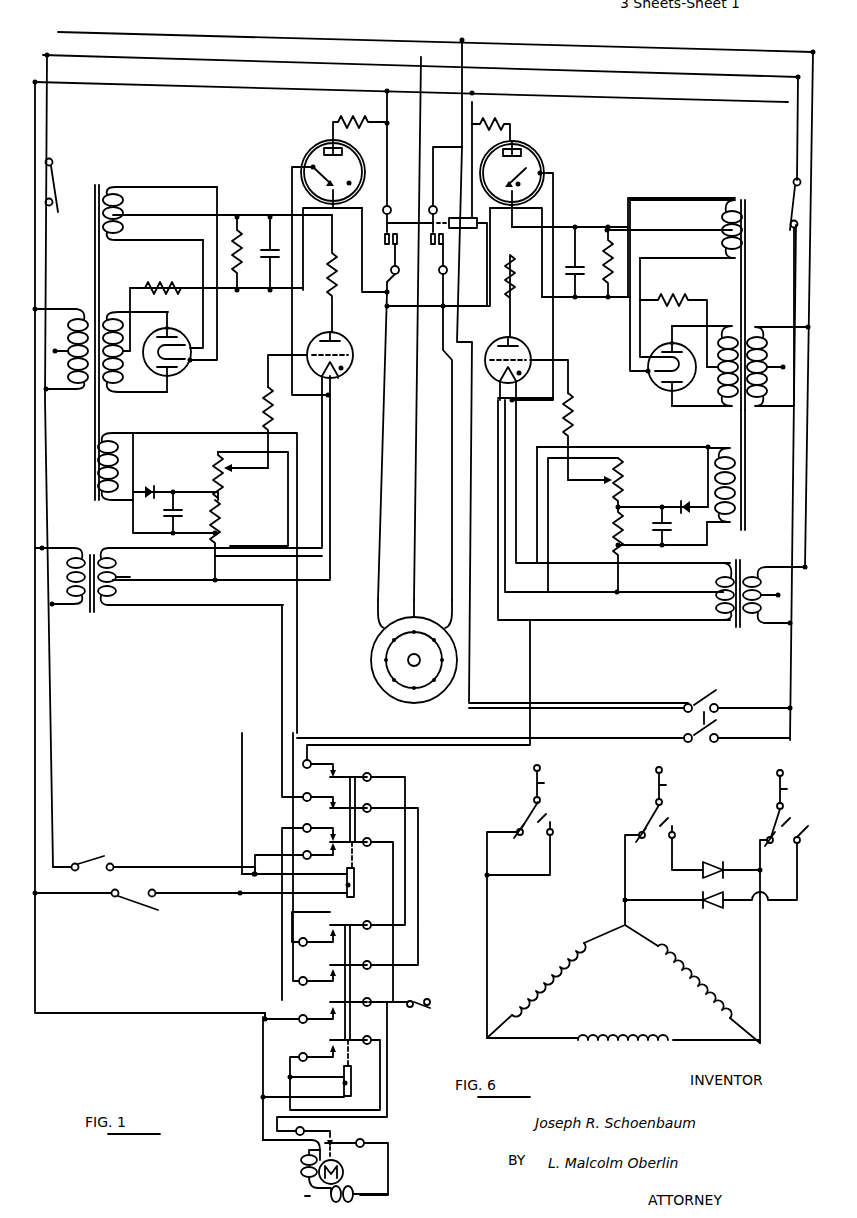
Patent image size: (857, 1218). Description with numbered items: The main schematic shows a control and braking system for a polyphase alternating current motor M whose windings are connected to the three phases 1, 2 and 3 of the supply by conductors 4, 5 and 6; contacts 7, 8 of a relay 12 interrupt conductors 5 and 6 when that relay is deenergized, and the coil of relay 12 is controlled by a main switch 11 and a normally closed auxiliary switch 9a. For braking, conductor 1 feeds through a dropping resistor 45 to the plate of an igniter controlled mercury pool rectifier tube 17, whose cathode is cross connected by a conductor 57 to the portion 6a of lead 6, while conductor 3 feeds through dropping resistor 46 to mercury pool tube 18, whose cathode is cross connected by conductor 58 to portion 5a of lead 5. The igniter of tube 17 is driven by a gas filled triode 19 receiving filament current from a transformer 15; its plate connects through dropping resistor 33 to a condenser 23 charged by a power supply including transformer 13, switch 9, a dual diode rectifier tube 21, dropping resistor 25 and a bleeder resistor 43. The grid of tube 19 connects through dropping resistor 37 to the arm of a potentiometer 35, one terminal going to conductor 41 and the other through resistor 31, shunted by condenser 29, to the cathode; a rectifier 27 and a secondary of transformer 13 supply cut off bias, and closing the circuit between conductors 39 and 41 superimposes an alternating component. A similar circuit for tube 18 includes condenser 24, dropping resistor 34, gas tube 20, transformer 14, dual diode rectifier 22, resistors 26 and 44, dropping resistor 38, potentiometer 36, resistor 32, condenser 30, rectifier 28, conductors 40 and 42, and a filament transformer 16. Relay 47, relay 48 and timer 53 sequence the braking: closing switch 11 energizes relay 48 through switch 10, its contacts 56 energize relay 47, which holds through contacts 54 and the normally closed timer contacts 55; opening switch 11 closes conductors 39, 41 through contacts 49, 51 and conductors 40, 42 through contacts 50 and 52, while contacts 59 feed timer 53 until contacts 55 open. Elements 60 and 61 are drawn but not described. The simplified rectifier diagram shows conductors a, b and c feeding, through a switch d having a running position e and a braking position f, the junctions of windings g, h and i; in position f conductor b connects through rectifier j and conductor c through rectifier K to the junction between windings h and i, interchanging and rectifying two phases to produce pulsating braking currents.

In FIG. 1, the phase conductor 1 is at (118, 82).
In FIG. 1, the phase conductor 2 is at (162, 55).
In FIG. 1, the phase conductor 3 is at (208, 32).
In FIG. 1, the conductor 4 is at (420, 158).
In FIG. 1, the conductor 5 is at (386, 192).
In FIG. 1, the portion of lead 5a is at (382, 398).
In FIG. 1, the conductor 6 is at (434, 192).
In FIG. 1, the portion of lead 6a is at (452, 395).
In FIG. 1, the contact 7 is at (388, 250).
In FIG. 1, the contact 8 is at (436, 250).
In FIG. 1, the normally closed switch 9 is at (52, 190).
In FIG. 1, the normally closed auxiliary switch 9a is at (778, 202).
In FIG. 1, the switch 10 is at (90, 856).
In FIG. 1, the main switch 11 is at (712, 740).
In FIG. 1, the relay 12 is at (460, 229).
In FIG. 1, the transformer 13 is at (108, 190).
In FIG. 1, the transformer 14 is at (736, 200).
In FIG. 1, the transformer 15 is at (82, 556).
In FIG. 1, the transformer 16 is at (735, 562).
In FIG. 1, the igniter controlled mercury pool rectifier tube 17 is at (306, 160).
In FIG. 1, the igniter controlled mercury pool rectifier tube 18 is at (538, 158).
In FIG. 1, the gas filled triode 19 is at (310, 344).
In FIG. 1, the gas tube 20 is at (528, 350).
In FIG. 1, the dual diode rectifier tube 21 is at (186, 342).
In FIG. 1, the dual diode rectifier 22 is at (652, 354).
In FIG. 1, the condenser 23 is at (256, 250).
In FIG. 1, the condenser 24 is at (578, 262).
In FIG. 1, the dropping resistor 25 is at (146, 286).
In FIG. 1, the resistor 26 is at (673, 323).
In FIG. 1, the rectifier 27 is at (158, 488).
In FIG. 1, the rectifier 28 is at (686, 502).
In FIG. 1, the condenser 29 is at (182, 513).
In FIG. 1, the condenser 30 is at (672, 530).
In FIG. 1, the resistor 31 is at (225, 541).
In FIG. 1, the resistor 32 is at (612, 528).
In FIG. 1, the dropping resistor 33 is at (340, 272).
In FIG. 1, the dropping resistor 34 is at (522, 268).
In FIG. 1, the potentiometer 35 is at (214, 472).
In FIG. 1, the potentiometer 36 is at (624, 494).
In FIG. 1, the dropping resistor 37 is at (264, 396).
In FIG. 1, the dropping resistor 38 is at (575, 422).
In FIG. 1, the conductor 39 is at (242, 436).
In FIG. 1, the conductor 40 is at (616, 452).
In FIG. 1, the conductor 41 is at (240, 456).
In FIG. 1, the conductor 42 is at (614, 468).
In FIG. 1, the bleeder resistor 43 is at (232, 254).
In FIG. 1, the resistor 44 is at (600, 256).
In FIG. 1, the dropping resistor 45 is at (358, 120).
In FIG. 1, the dropping resistor 46 is at (491, 120).
In FIG. 1, the relay 47 is at (350, 1080).
In FIG. 1, the relay 48 is at (352, 880).
In FIG. 1, the contact 49 is at (314, 859).
In FIG. 1, the contact 50 is at (314, 929).
In FIG. 1, the contact 51 is at (334, 800).
In FIG. 1, the contact 52 is at (318, 770).
In FIG. 1, the timer 53 is at (340, 1186).
In FIG. 1, the contact 54 is at (313, 1058).
In FIG. 1, the normally closed timer contact 55 is at (335, 1137).
In FIG. 1, the contact 56 is at (338, 856).
In FIG. 1, the conductor 57 is at (368, 280).
In FIG. 1, the conductor 58 is at (464, 294).
In FIG. 1, the contact 59 is at (334, 834).
In FIG. 1, the switch 60 is at (132, 898).
In FIG. 1, the switch 61 is at (418, 998).
In FIG. 1, the polyphase alternating current motor M is at (370, 662).
In FIG. 6, the conductor a is at (545, 784).
In FIG. 6, the conductor b is at (667, 786).
In FIG. 6, the conductor c is at (788, 789).
In FIG. 6, the switch d is at (512, 817).
In FIG. 6, the running position e is at (668, 819).
In FIG. 6, the braking position f is at (677, 846).
In FIG. 6, the motor winding g is at (548, 972).
In FIG. 6, the motor winding h is at (688, 964).
In FIG. 6, the motor winding i is at (640, 1050).
In FIG. 6, the rectifier j is at (704, 878).
In FIG. 6, the rectifier K is at (700, 904).